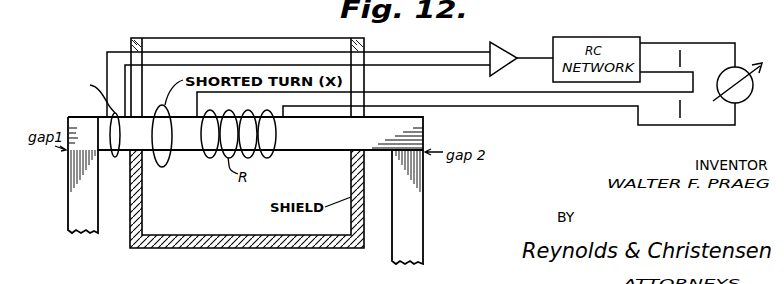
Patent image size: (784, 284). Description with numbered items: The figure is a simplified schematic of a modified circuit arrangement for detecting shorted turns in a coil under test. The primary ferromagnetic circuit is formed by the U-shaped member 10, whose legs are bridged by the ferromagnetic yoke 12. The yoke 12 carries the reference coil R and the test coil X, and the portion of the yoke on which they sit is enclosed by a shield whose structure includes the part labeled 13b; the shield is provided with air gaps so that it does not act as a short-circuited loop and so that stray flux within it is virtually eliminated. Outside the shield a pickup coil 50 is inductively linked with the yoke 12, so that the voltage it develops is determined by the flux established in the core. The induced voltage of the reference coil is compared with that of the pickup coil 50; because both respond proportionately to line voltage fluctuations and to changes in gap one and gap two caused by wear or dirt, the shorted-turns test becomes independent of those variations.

The yoke 12 is at (424, 133).
The U-shaped member 10 is at (425, 184).
The shield 13b is at (247, 58).
The pickup coil 50 is at (94, 116).